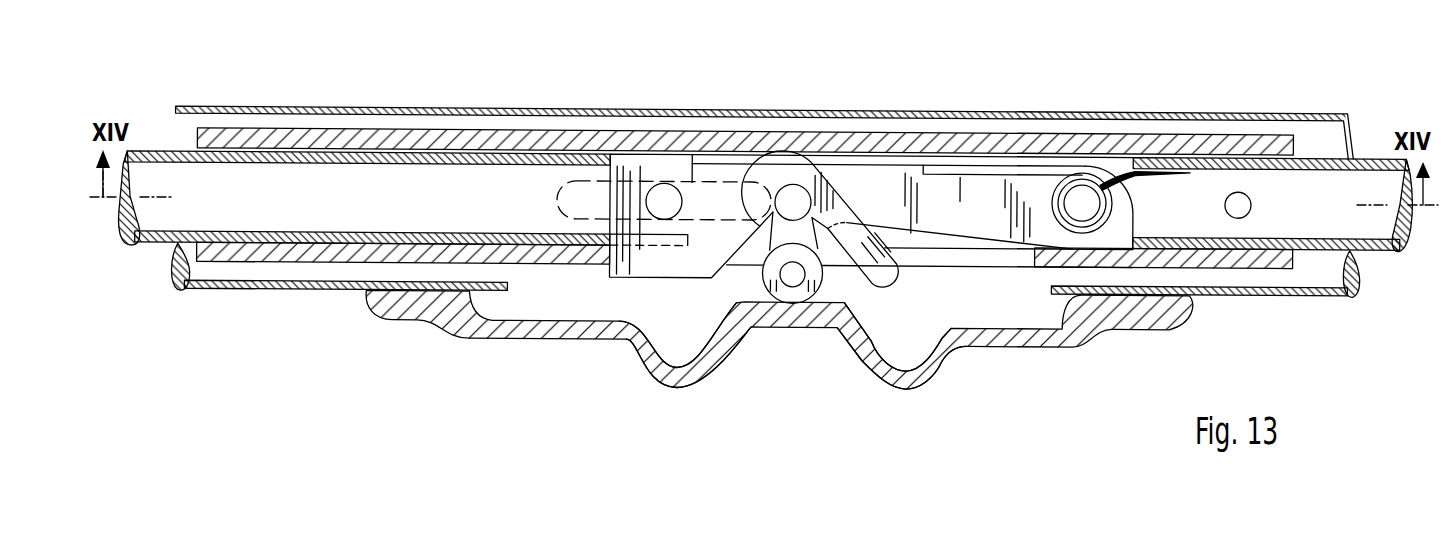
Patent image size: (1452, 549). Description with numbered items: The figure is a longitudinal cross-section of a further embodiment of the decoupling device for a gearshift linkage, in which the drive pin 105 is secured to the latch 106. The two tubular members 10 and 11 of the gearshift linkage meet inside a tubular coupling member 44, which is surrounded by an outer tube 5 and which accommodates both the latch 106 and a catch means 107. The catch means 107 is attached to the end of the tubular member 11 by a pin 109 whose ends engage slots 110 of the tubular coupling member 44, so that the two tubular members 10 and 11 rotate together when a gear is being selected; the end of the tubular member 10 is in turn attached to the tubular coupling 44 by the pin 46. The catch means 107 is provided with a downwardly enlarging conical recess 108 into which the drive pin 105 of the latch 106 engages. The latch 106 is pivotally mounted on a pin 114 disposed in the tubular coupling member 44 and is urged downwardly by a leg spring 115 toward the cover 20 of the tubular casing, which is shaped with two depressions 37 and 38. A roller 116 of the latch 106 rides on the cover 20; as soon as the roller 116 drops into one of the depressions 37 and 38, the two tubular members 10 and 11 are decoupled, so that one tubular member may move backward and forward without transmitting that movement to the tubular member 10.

The outer tube 5 is at (1115, 115).
The tubular member 10 is at (1366, 160).
The tubular member 11 is at (183, 153).
The cover 20 is at (1008, 338).
The depression 37 is at (677, 355).
The depression 38 is at (905, 355).
The tubular coupling member 44 is at (996, 148).
The pin 46 is at (1236, 199).
The drive pin 105 is at (796, 198).
The latch 106 is at (950, 195).
The catch means 107 is at (638, 168).
The conical recess 108 is at (792, 199).
The pin 109 is at (662, 208).
The slots 110 is at (583, 207).
The pin 114 is at (1082, 195).
The leg spring 115 is at (1040, 173).
The roller 116 is at (792, 287).